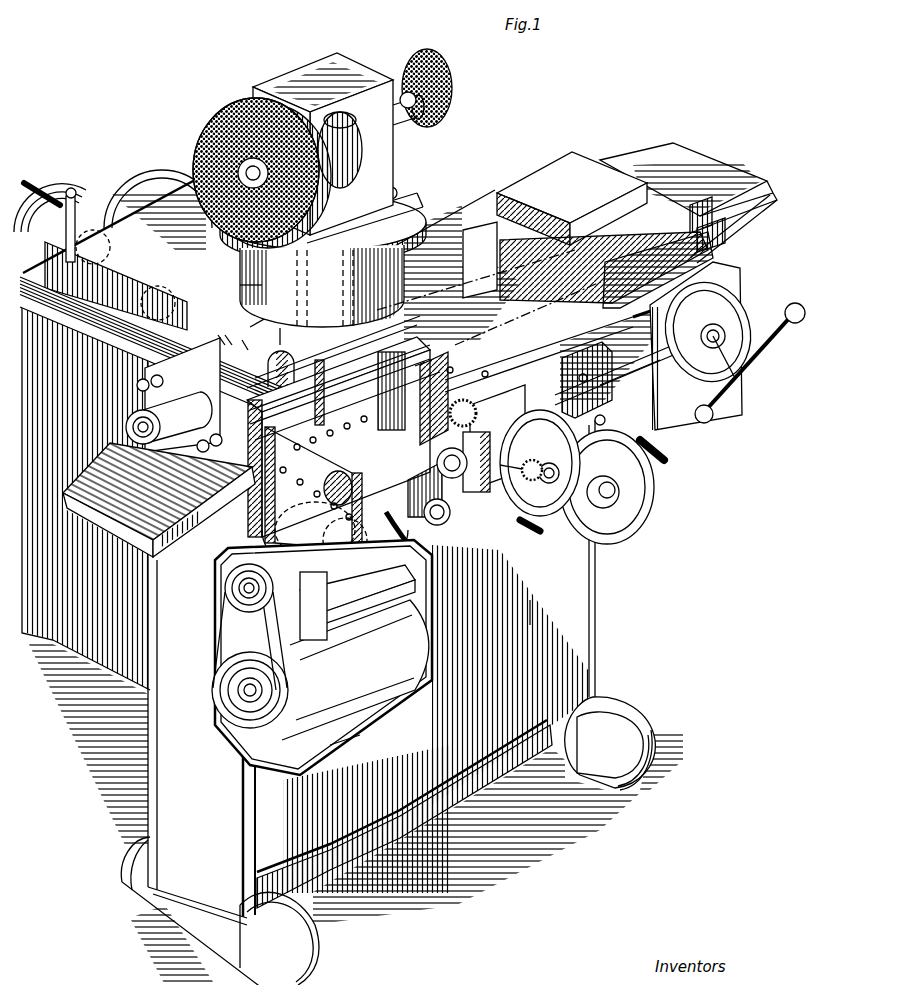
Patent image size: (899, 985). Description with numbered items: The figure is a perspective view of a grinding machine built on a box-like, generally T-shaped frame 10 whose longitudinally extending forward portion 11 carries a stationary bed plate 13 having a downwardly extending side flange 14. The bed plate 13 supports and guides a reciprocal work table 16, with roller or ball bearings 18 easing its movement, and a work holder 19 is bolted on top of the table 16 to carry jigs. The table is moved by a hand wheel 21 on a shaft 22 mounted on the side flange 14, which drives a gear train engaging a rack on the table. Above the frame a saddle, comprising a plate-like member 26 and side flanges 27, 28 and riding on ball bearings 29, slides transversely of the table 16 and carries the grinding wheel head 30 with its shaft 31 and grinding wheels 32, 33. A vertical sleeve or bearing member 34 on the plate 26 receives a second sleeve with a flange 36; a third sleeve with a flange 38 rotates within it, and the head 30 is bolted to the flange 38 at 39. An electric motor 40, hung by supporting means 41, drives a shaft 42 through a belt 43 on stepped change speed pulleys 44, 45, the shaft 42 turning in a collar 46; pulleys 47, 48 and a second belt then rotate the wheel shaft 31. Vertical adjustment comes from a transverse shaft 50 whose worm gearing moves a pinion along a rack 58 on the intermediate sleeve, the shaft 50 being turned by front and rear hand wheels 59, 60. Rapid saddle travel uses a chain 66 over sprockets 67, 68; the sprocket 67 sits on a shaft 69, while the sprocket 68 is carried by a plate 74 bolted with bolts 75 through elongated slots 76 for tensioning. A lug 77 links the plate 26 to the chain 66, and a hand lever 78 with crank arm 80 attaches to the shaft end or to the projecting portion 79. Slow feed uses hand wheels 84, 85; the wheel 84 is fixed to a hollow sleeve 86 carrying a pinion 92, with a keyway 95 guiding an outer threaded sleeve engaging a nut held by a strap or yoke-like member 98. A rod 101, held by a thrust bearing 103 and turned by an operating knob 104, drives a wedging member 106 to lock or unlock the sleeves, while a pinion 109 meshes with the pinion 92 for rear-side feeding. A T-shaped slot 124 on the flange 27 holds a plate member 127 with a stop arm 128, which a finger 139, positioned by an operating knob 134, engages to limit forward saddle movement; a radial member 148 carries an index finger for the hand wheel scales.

The frame 10 is at (137, 690).
The longitudinally extending forward portion 11 is at (531, 622).
The bed plate 13 is at (506, 315).
The side flange 14 is at (620, 388).
The work table 16 is at (655, 210).
The roller or ball bearings 18 is at (600, 252).
The work holder 19 is at (575, 158).
The hand wheel 21 is at (727, 390).
The shaft 22 is at (720, 350).
The plate-like member 26 is at (271, 250).
The side flange 27 is at (125, 332).
The side flange 28 is at (648, 358).
The ball bearings 29 is at (585, 381).
The grinding wheel head 30 is at (288, 68).
The shaft 31 is at (362, 135).
The grinding wheel 32 is at (232, 108).
The grinding wheel 33 is at (428, 58).
The sleeve or bearing member 34 is at (240, 280).
The flange 36 is at (275, 255).
The flange 38 is at (412, 185).
The bolts 39 is at (389, 192).
The electric motor 40 is at (345, 742).
The supporting means 41 is at (435, 592).
The shaft 42 is at (319, 606).
The belt 43 is at (235, 636).
The change speed pulley 44 is at (228, 684).
The change speed pulley 45 is at (228, 596).
The collar 46 is at (362, 640).
The pulley 47 is at (358, 612).
The pulley 48 is at (332, 112).
The shaft 50 is at (620, 493).
The rack 58 is at (410, 355).
The hand wheel 59 is at (618, 533).
The hand wheel 60 is at (153, 176).
The chain 66 is at (300, 408).
The sprocket 67 is at (321, 540).
The sprocket 68 is at (240, 478).
The shaft 69 is at (560, 360).
The plate 74 is at (135, 405).
The bolts 75 is at (137, 384).
The elongated slots 76 is at (215, 447).
The lug 77 is at (315, 368).
The hand lever 78 is at (778, 332).
The outwardly projecting portion 79 is at (132, 428).
The crank arm 80 is at (700, 420).
The hand wheel 84 is at (528, 530).
The hand wheel 85 is at (70, 193).
The hollow sleeve 86 is at (372, 335).
The pinion 92 is at (485, 372).
The keyway 95 is at (420, 366).
The strap or yoke-like member 98 is at (452, 368).
The rod 101 is at (470, 570).
The thrust bearing 103 is at (447, 540).
The operating knob 104 is at (545, 536).
The wedging member 106 is at (607, 423).
The pinion 109 is at (458, 408).
The T-shaped slot 124 is at (218, 335).
The plate member 127 is at (225, 335).
The stop arm 128 is at (242, 340).
The operating knob 134 is at (450, 514).
The finger 139 is at (280, 328).
The member 148 is at (78, 200).